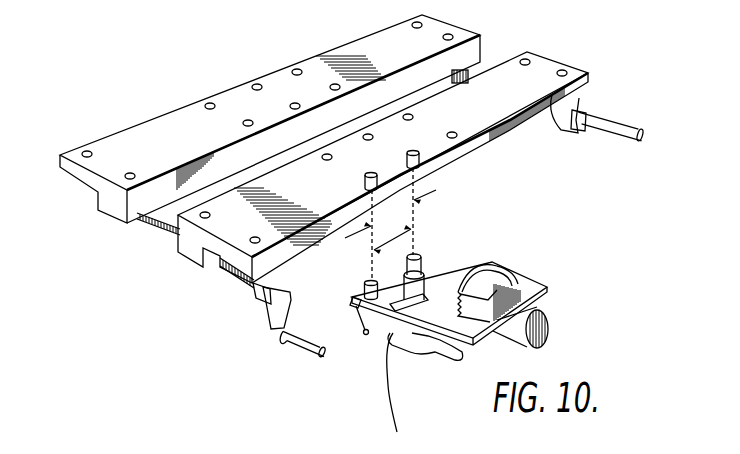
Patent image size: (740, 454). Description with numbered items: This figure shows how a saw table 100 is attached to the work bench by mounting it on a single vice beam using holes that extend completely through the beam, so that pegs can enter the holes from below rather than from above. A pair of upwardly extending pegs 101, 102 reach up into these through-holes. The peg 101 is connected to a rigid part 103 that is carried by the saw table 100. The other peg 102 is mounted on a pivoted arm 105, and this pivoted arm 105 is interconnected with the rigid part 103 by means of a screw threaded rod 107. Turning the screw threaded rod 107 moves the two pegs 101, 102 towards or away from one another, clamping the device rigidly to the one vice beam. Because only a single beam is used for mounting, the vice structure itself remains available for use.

The saw table 100 is at (530, 283).
The peg 101 is at (365, 287).
The peg 102 is at (418, 254).
The rigid part 103 is at (372, 382).
The pivoted arm 105 is at (423, 282).
The screw threaded rod 107 is at (383, 280).